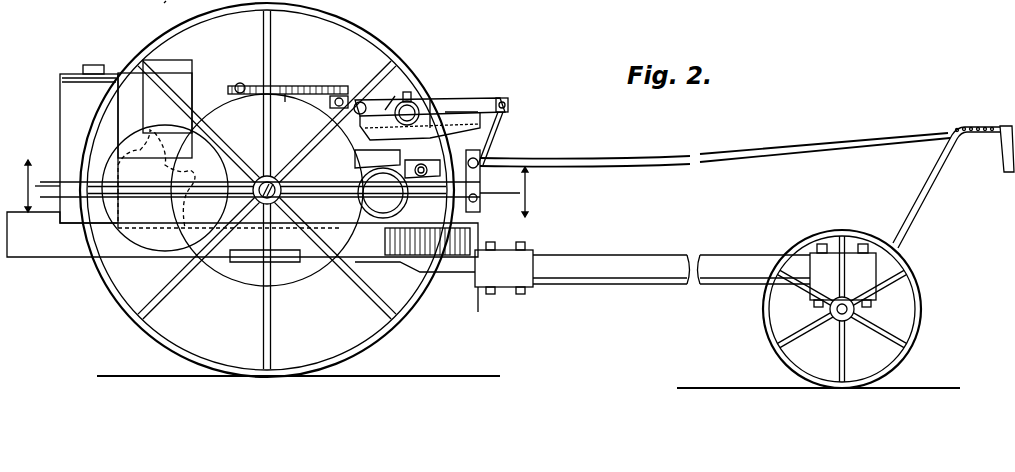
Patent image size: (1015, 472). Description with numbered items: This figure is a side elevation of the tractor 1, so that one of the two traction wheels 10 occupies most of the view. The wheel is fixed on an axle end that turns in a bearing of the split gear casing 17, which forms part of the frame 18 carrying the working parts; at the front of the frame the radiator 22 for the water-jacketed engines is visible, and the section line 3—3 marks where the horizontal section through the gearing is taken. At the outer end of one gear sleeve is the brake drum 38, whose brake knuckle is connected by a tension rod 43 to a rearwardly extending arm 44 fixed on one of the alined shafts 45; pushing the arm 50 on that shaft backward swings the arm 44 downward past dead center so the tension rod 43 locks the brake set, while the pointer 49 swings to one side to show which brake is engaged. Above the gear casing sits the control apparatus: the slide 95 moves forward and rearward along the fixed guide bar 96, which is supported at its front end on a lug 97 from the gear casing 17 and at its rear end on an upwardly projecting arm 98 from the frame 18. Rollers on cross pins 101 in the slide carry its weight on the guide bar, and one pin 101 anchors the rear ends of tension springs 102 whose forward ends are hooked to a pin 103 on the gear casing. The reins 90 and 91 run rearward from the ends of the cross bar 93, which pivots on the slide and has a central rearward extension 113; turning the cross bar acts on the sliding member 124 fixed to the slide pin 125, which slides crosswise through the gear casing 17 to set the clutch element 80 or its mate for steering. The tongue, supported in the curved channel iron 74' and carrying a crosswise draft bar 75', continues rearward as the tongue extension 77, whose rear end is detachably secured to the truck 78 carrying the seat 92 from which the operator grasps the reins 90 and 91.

The machine 1 is at (160, 6).
The section line 3— 3 is at (275, 188).
The traction wheel 10 is at (167, 1).
The split gear casing 17 is at (222, 102).
The frame 18 is at (78, 256).
The radiator 22 is at (72, 100).
The brake drum 38 is at (250, 252).
The tension rod 43 is at (350, 140).
The rearwardly extending arm 44 is at (440, 170).
The alined shaft 45 is at (420, 178).
The pointer 49 is at (480, 190).
The arm 50 is at (468, 100).
The curved channel iron 74' is at (447, 238).
The crosswise draft bar 75' is at (491, 315).
The tongue extension 77 is at (640, 285).
The truck 78 is at (822, 262).
The clutch element 80 is at (378, 220).
The rein 90 is at (628, 157).
The rein 91 is at (680, 164).
The seat 92 is at (972, 124).
The cross bar 93 is at (360, 102).
The slide 95 is at (396, 96).
The guide bar 96 is at (503, 100).
The lug 97 is at (322, 98).
The upwardly projecting arm 98 is at (500, 128).
The cross pin 101 is at (416, 100).
The tension spring 102 is at (290, 90).
The pin 103 is at (243, 82).
The central rearward extension 113 is at (432, 98).
The sliding member 124 is at (460, 112).
The slide pin 125 is at (360, 180).